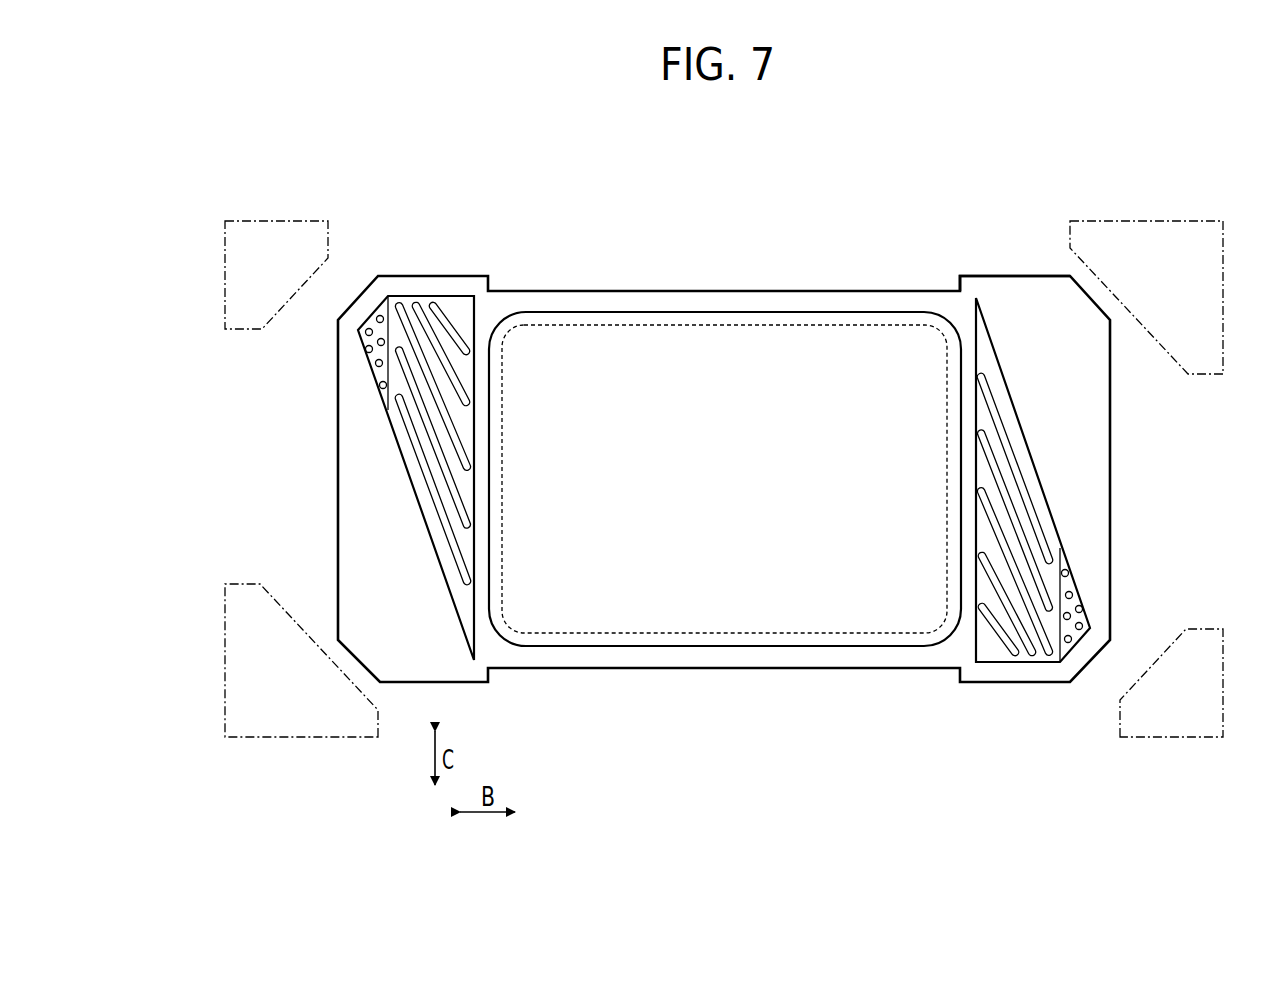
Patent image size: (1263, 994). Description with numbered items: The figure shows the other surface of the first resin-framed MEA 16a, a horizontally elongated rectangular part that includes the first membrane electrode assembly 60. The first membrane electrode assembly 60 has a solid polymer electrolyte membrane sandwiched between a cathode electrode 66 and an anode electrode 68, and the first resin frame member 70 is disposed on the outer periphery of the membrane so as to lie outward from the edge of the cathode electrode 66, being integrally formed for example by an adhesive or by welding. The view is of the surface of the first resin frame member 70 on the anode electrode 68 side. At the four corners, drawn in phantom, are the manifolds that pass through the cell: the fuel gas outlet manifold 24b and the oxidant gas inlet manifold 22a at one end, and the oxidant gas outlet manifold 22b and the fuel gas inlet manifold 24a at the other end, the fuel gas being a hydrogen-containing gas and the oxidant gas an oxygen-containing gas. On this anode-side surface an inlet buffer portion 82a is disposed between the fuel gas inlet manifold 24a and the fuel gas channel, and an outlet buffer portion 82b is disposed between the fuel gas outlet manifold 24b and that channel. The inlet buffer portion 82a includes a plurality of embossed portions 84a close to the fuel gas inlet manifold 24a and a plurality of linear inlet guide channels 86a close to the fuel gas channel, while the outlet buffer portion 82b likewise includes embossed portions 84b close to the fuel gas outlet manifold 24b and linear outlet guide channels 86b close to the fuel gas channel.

The first resin-framed MEA 16a is at (493, 180).
The first resin frame member 70 is at (975, 274).
The first membrane electrode assembly 60 is at (756, 309).
The anode electrode 68 is at (603, 318).
The cathode electrode 66 is at (662, 335).
The outlet buffer portion 82b is at (426, 292).
The embossed portions 84b is at (375, 363).
The linear outlet guide channels 86b is at (453, 461).
The inlet buffer portion 82a is at (1027, 668).
The embossed portions 84a is at (1074, 596).
The linear inlet guide channels 86a is at (995, 497).
The fuel gas outlet manifold 24b is at (266, 243).
The oxidant gas outlet manifold 22b is at (1142, 240).
The oxidant gas inlet manifold 22a is at (278, 720).
The fuel gas inlet manifold 24a is at (1160, 720).